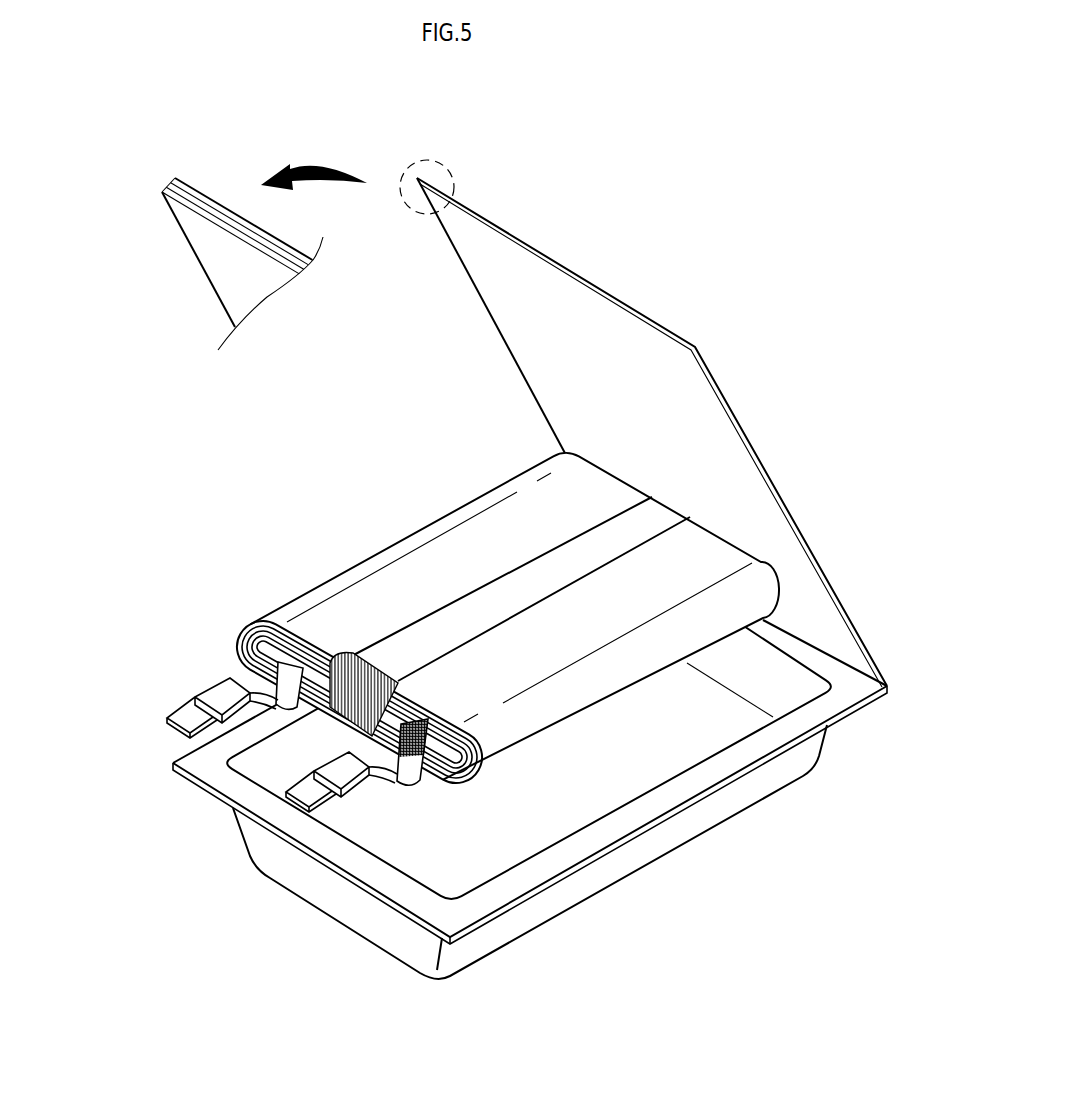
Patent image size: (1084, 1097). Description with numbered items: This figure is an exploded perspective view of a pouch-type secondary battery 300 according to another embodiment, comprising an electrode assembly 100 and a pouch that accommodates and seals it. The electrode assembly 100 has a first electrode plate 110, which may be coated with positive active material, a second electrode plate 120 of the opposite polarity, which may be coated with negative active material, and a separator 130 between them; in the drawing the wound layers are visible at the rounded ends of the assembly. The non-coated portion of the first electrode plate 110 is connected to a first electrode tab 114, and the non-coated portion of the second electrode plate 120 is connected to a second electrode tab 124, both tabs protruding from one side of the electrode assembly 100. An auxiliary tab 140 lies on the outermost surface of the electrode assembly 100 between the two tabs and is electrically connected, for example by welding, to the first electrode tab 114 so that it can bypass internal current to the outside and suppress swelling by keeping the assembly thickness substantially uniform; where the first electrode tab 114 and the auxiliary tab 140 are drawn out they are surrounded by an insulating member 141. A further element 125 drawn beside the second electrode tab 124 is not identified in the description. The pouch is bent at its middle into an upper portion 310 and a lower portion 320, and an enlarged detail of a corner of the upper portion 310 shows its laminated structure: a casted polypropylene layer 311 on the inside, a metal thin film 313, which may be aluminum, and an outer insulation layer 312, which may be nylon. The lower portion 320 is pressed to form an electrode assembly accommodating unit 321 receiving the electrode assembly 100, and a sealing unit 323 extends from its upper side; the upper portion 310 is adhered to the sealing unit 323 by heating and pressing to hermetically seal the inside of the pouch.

The pouch-type secondary battery 300 is at (477, 558).
The upper portion 310 is at (477, 397).
The casted polypropylene (CPP) layer 311 is at (163, 191).
The insulation layer 312 is at (175, 180).
The metal thin film 313 is at (168, 187).
The lower portion 320 is at (530, 791).
The electrode assembly accommodating unit 321 is at (583, 798).
The sealing unit 323 is at (420, 897).
The electrode assembly 100 is at (446, 706).
The first electrode plate 110 is at (256, 622).
The second electrode plate 120 is at (256, 648).
The separator 130 is at (250, 631).
The auxiliary tab 140 is at (512, 583).
The insulating member 141 is at (342, 682).
The first electrode tab 114 is at (403, 768).
The second electrode tab 124 is at (285, 697).
The electrode lead 125 is at (215, 692).